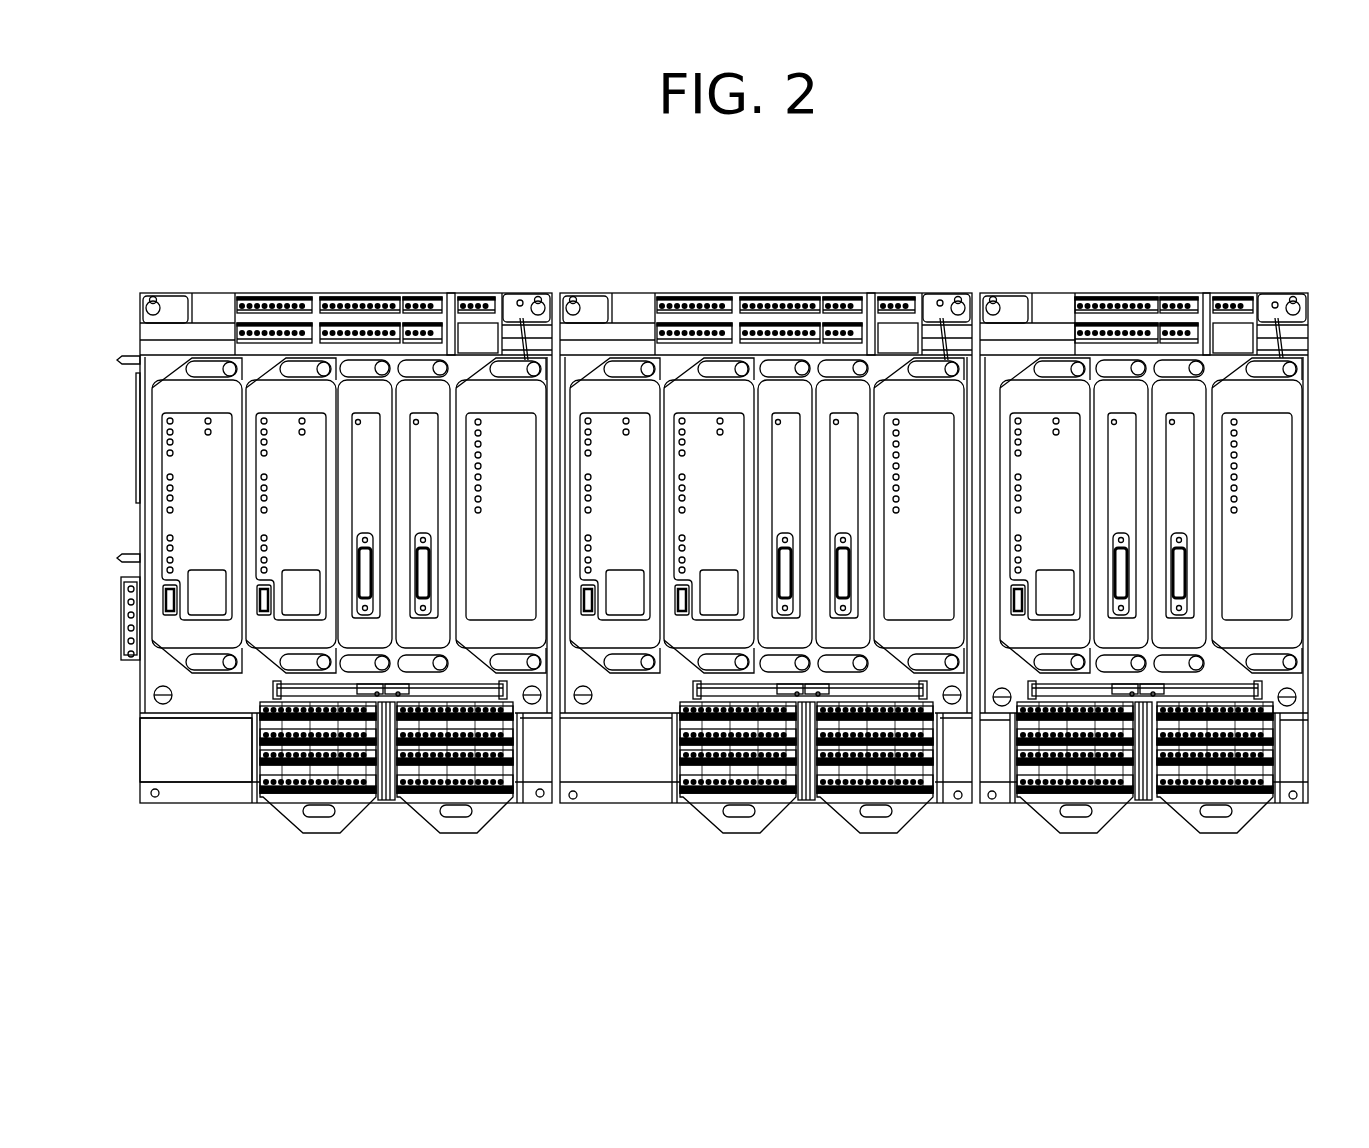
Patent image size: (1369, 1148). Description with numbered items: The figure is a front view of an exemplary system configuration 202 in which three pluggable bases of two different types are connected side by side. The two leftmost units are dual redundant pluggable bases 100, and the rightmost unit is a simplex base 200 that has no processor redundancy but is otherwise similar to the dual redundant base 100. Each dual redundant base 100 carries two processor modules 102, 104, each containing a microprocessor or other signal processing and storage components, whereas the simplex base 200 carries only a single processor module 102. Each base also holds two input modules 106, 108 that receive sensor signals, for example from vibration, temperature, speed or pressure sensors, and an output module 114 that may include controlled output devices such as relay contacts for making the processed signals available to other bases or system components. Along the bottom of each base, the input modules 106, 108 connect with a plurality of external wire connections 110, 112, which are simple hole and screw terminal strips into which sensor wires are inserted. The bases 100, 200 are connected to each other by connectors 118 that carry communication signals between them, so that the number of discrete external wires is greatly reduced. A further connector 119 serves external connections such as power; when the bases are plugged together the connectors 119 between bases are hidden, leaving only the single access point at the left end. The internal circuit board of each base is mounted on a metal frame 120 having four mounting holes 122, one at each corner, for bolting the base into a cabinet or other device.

The pluggable base 100 is at (338, 294).
The processor module 102 is at (198, 450).
The processor module 104 is at (285, 425).
The input module 106 is at (368, 430).
The input module 108 is at (427, 430).
The external wire connections 110 is at (282, 790).
The external wire connections 112 is at (420, 790).
The output module 114 is at (515, 555).
The connector 118 is at (137, 448).
The connector 119 is at (122, 625).
The frame 120 is at (165, 745).
The mounting holes 122 is at (152, 296).
The simplex base 200 is at (1105, 294).
The system configuration 202 is at (504, 182).